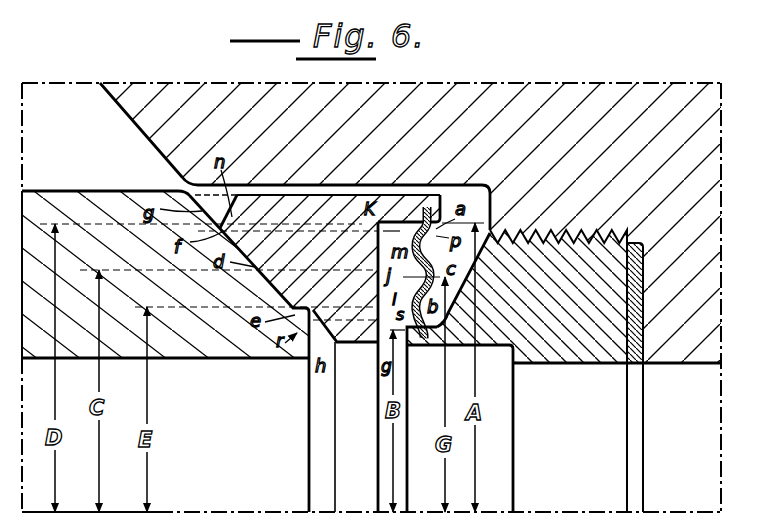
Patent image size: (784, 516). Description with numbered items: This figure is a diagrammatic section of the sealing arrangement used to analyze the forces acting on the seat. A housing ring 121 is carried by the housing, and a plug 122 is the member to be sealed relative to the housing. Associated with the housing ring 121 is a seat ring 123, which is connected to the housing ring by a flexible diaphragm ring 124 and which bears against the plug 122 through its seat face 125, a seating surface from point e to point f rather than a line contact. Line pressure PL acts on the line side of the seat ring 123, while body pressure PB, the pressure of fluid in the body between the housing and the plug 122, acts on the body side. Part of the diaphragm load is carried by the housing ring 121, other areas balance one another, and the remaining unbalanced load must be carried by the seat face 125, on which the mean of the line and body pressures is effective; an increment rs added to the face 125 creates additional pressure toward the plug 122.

The housing ring 121 is at (588, 343).
The plug 122 is at (202, 357).
The seat ring 123 is at (408, 195).
The diaphragm ring 124 is at (442, 291).
The seat face 125 is at (277, 286).
The body pressure PB is at (186, 185).
The line pressure PL is at (561, 434).